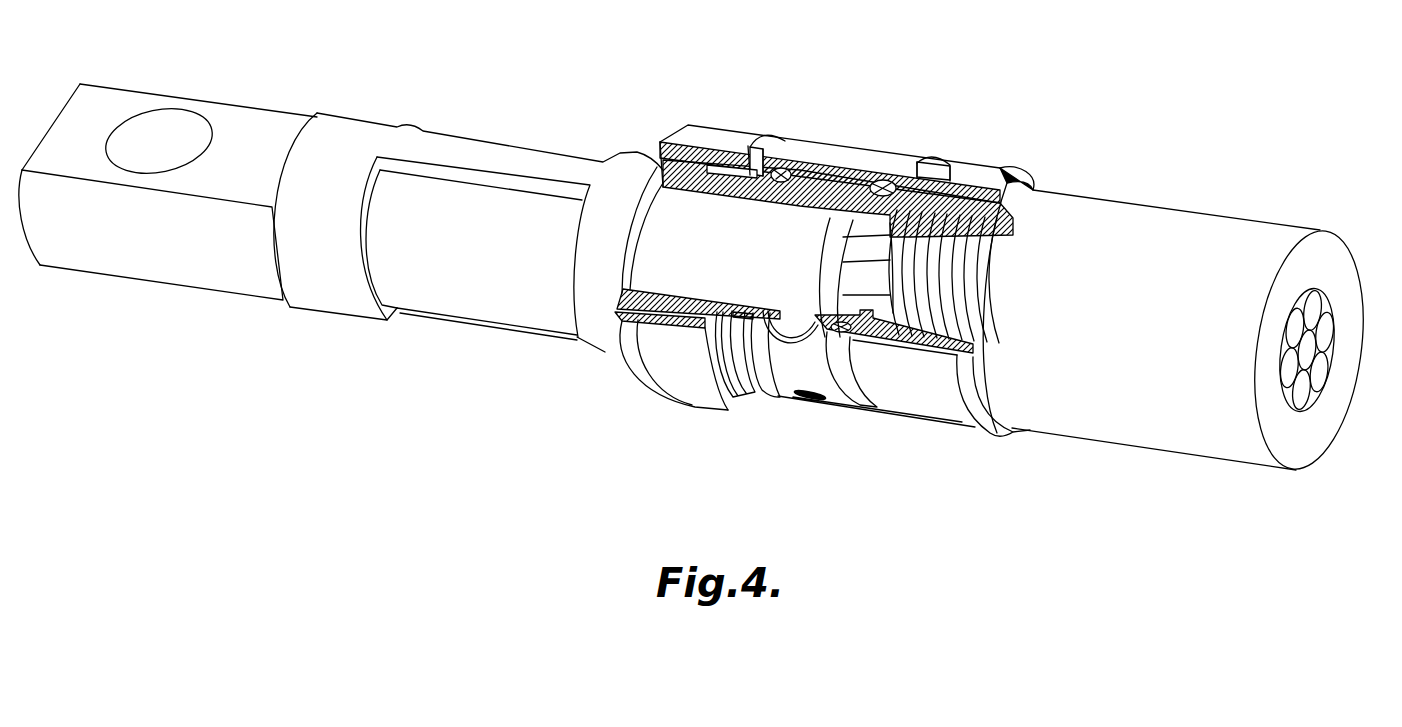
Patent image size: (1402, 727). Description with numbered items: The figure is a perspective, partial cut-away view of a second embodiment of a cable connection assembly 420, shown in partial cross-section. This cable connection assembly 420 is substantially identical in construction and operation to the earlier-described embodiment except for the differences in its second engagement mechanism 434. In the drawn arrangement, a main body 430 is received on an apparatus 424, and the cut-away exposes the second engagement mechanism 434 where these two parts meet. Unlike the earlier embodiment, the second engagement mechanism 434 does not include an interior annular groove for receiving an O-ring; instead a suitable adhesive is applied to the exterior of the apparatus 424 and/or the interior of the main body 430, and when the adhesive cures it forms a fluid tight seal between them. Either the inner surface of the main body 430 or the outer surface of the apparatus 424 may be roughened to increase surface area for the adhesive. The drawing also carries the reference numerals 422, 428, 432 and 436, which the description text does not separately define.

The cable connection assembly 420 is at (868, 235).
The cable 422 is at (1194, 306).
The apparatus 424 is at (399, 112).
The cable jacket / conductor strands 428 is at (1200, 225).
The main body 430 is at (707, 168).
The end cap 432 is at (1008, 243).
The second engagement mechanism 434 is at (663, 176).
The second set screw 436 is at (986, 158).